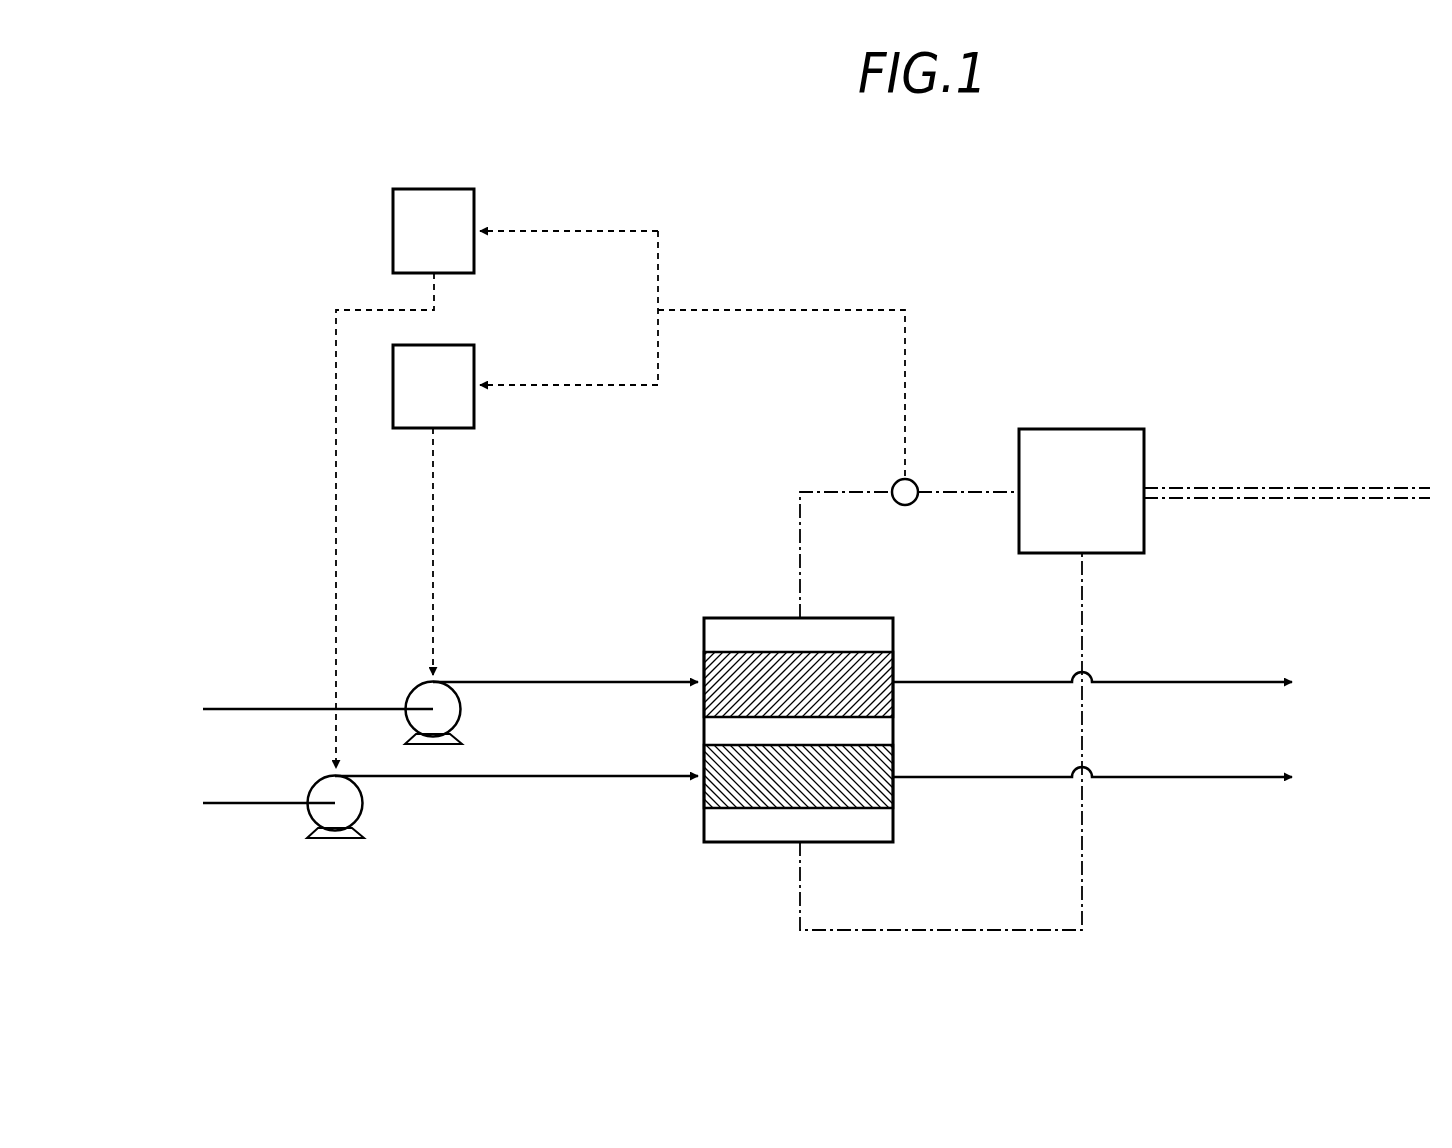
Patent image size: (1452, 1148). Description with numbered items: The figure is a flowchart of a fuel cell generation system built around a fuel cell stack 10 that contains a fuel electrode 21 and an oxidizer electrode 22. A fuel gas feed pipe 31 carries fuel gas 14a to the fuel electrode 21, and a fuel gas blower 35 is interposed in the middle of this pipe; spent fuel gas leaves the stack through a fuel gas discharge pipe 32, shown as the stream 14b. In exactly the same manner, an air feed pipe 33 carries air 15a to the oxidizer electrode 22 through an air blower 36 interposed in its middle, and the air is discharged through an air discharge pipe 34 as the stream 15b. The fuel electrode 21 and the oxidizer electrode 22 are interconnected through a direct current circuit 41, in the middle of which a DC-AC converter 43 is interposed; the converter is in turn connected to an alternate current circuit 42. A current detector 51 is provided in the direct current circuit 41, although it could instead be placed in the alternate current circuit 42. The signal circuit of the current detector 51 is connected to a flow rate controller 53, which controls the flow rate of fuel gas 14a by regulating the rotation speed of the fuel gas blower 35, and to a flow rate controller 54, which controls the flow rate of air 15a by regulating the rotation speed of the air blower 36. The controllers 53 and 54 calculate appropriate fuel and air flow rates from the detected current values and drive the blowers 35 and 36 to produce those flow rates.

The fuel cell stack 10 is at (781, 757).
The fuel electrode 21 is at (893, 658).
The oxidizer electrode 22 is at (893, 797).
The fuel gas feed pipe 31 is at (262, 709).
The fuel gas discharge pipe 32 is at (1190, 682).
The oxidizer gas (air) feed pipe 33 is at (265, 803).
The air discharge pipe 34 is at (1205, 777).
The fuel gas blower 35 is at (452, 712).
The air blower 36 is at (357, 803).
The direct current circuit 41 is at (800, 566).
The alternate current circuit 42 is at (1280, 488).
The DC-AC converter 43 is at (1085, 429).
The current detector 51 is at (895, 482).
The flow rate controller 53 is at (445, 345).
The flow rate controller 54 is at (428, 189).
The fuel gas 14a is at (186, 709).
The fuel outlet 14b is at (1333, 682).
The air 15a is at (186, 803).
The oxidant outlet 15b is at (1333, 776).